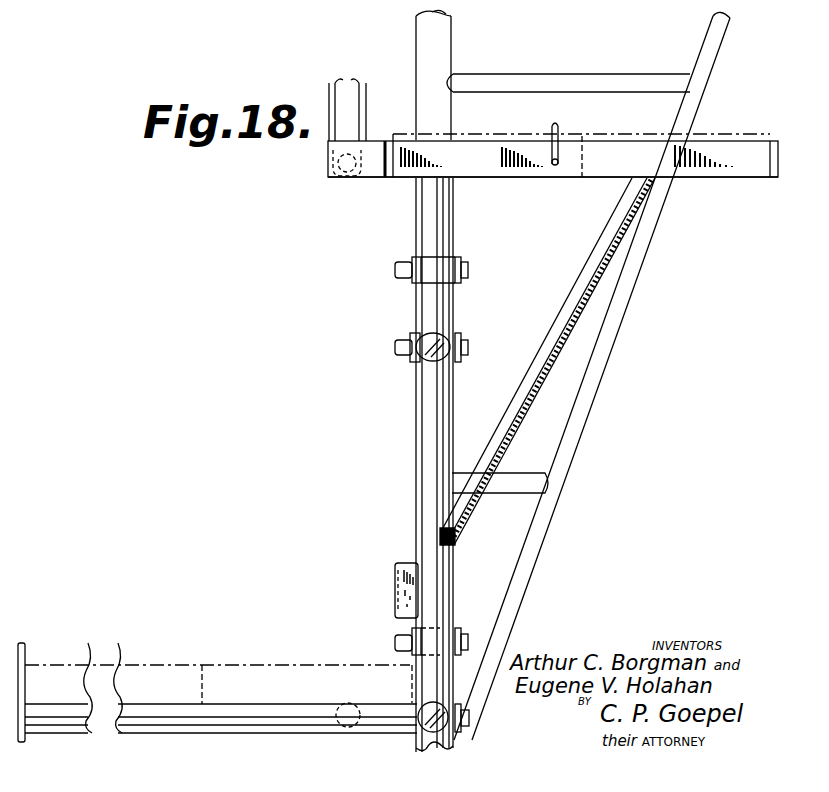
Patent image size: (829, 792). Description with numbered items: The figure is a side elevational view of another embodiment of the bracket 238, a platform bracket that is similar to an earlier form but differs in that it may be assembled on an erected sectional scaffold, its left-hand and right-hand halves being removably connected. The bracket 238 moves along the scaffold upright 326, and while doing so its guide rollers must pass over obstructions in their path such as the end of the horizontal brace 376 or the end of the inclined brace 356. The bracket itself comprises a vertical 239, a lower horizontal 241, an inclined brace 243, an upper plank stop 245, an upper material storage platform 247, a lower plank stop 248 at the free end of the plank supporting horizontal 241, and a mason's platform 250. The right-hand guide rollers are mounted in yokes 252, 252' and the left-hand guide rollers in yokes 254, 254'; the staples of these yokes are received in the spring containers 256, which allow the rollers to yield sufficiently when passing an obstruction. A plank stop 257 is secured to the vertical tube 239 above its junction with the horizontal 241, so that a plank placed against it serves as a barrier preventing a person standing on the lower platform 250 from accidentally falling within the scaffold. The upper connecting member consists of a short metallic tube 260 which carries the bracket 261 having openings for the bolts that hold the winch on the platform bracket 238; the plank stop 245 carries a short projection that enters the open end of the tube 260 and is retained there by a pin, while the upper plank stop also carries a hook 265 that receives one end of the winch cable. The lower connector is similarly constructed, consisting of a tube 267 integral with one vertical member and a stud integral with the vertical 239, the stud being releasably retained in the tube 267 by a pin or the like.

The bracket 238 is at (284, 337).
The upright 326 is at (417, 29).
The vertical 239 is at (427, 432).
The horizontal brace 376 is at (640, 64).
The inclined brace 356 is at (590, 366).
The upper material storage platform 247 is at (730, 131).
The upper plank stop 245 is at (613, 170).
The hook 265 is at (558, 128).
The bracket 261 is at (347, 96).
The short metallic tube 260 is at (345, 172).
The inclined brace 243 is at (514, 400).
The yoke 254 is at (452, 262).
The yoke 254' is at (443, 628).
The yoke 252 is at (448, 338).
The yoke 252' is at (491, 718).
The spring container 256 is at (428, 362).
The plank stop 257 is at (403, 565).
The lower horizontal 241 is at (158, 735).
The lower plank stop 248 is at (25, 651).
The mason's platform 250 is at (142, 657).
The tube 267 is at (338, 728).